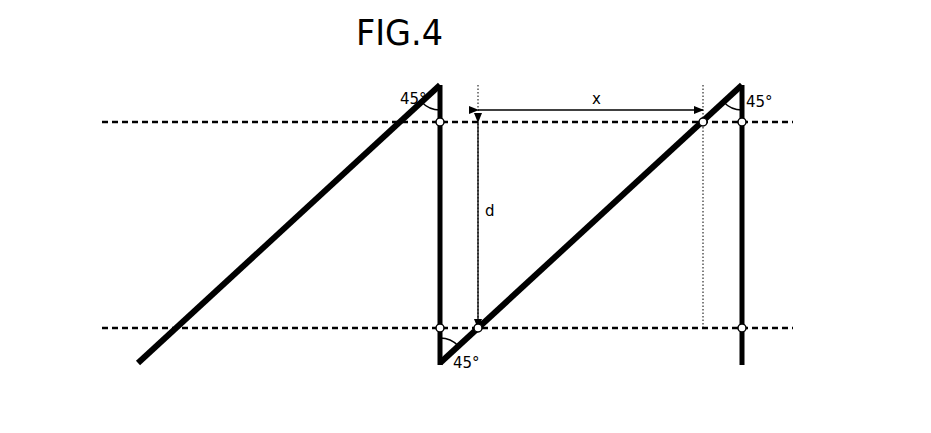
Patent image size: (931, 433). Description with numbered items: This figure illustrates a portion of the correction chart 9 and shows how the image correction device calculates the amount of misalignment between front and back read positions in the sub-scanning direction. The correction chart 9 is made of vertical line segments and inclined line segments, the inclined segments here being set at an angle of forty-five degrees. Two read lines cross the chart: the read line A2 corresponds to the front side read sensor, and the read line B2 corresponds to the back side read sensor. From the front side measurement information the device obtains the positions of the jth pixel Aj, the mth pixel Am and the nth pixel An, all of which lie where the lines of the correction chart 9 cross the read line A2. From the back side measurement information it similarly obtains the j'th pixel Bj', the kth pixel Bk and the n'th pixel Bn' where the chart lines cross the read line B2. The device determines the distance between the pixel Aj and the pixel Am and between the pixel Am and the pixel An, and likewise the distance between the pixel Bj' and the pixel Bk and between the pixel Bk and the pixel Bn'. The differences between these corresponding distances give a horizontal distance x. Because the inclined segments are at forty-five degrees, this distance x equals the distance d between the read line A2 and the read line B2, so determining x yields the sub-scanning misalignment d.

The read line A2 is at (431, 122).
The read line B2 is at (431, 328).
The jth pixel Aj is at (437, 125).
The mth pixel Am is at (706, 126).
The nth pixel An is at (745, 124).
The j'th pixel Bj' is at (412, 342).
The kth pixel Bk is at (480, 332).
The n'th pixel Bn' is at (779, 311).
The correction chart 9 is at (745, 348).